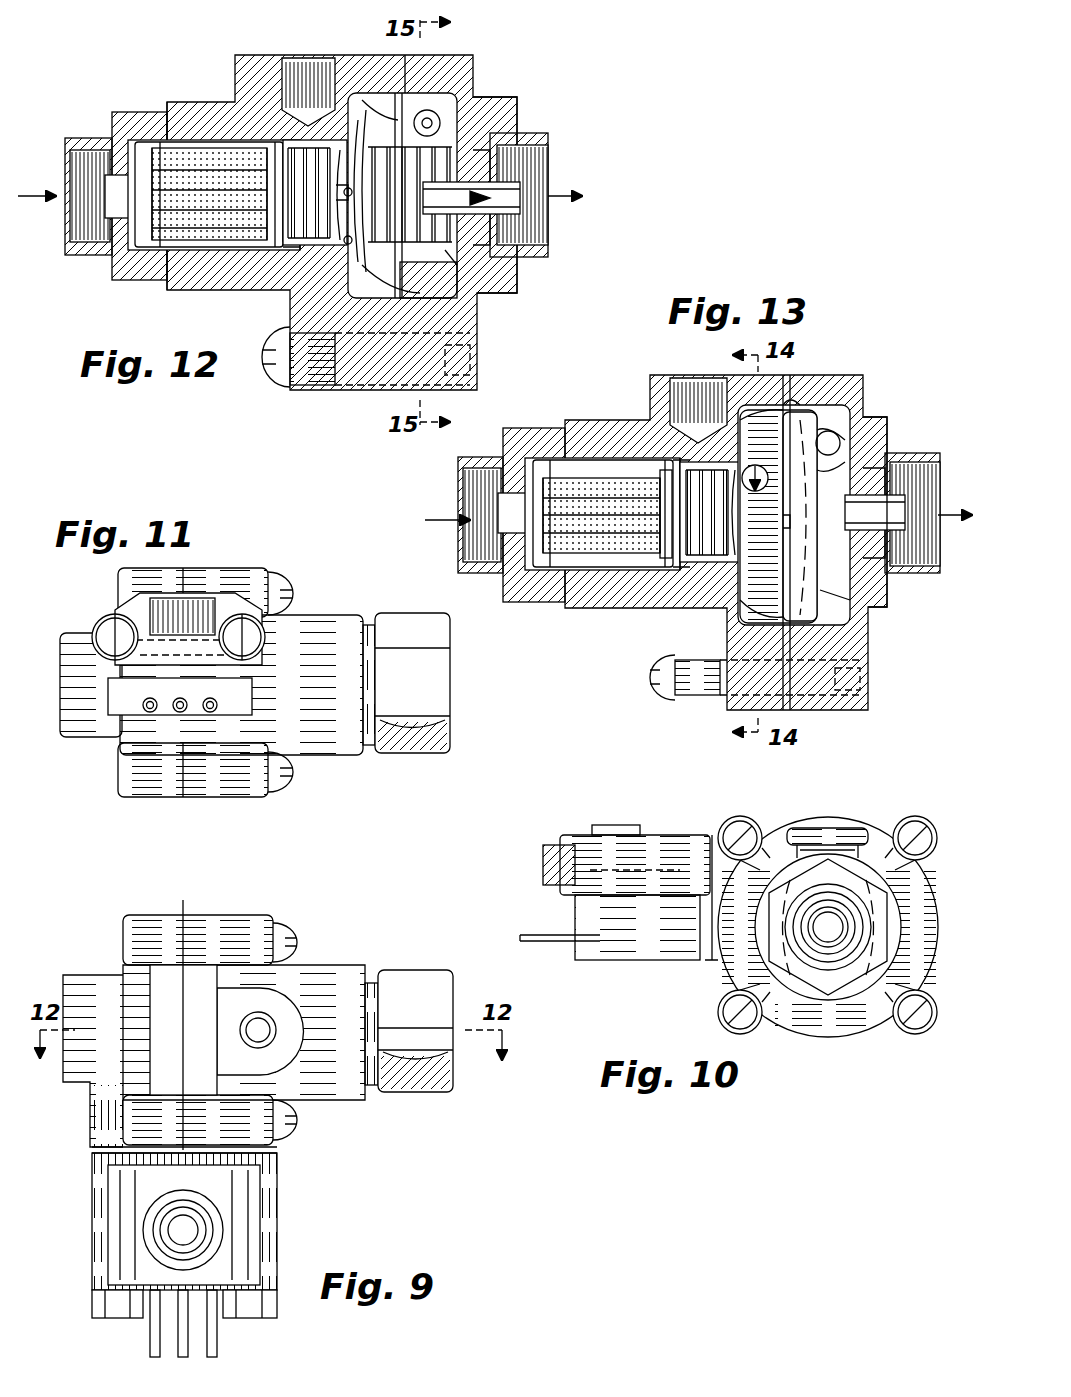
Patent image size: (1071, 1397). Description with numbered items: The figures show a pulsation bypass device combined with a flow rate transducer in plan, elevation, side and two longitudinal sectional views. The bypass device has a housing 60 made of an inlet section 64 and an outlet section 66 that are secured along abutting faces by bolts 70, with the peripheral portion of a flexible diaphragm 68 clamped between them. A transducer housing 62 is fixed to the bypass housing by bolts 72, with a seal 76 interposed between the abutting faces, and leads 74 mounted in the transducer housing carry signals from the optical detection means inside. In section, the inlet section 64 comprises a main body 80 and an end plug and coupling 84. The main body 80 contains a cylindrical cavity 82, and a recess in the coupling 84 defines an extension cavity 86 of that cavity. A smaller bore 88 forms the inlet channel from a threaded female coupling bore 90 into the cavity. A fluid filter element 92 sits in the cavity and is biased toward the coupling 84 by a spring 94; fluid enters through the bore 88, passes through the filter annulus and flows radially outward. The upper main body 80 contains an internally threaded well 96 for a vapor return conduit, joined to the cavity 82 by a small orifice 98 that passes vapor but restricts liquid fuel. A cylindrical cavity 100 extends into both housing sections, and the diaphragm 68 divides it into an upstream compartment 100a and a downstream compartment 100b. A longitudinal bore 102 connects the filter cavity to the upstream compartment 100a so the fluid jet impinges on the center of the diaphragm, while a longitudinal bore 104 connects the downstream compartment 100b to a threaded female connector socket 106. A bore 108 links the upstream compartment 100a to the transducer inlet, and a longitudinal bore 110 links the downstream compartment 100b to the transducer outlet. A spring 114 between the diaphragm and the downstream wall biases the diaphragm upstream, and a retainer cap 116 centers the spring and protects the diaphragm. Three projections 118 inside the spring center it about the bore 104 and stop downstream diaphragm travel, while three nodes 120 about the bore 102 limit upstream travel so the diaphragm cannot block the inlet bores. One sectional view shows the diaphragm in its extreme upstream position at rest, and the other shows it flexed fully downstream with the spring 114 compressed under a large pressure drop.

In FIG. 12, the housing 60 is at (480, 72).
In FIG. 13, the housing 60 is at (662, 376).
In FIG. 11, the housing 60 is at (316, 614).
In FIG. 9, the housing 60 is at (336, 960).
In FIG. 10, the housing 60 is at (840, 815).
In FIG. 11, the transducer housing 62 is at (128, 690).
In FIG. 9, the transducer housing 62 is at (288, 1205).
In FIG. 10, the transducer housing 62 is at (632, 832).
In FIG. 12, the inlet section 64 is at (158, 100).
In FIG. 11, the inlet section 64 is at (340, 750).
In FIG. 9, the inlet section 64 is at (362, 976).
In FIG. 10, the inlet section 64 is at (758, 957).
In FIG. 12, the outlet section 66 is at (522, 96).
In FIG. 13, the outlet section 66 is at (842, 702).
In FIG. 11, the outlet section 66 is at (80, 640).
In FIG. 9, the outlet section 66 is at (90, 985).
In FIG. 12, the diaphragm 68 is at (398, 93).
In FIG. 13, the diaphragm 68 is at (792, 440).
In FIG. 11, the diaphragm 68 is at (186, 568).
In FIG. 9, the diaphragm 68 is at (183, 1006).
In FIG. 12, the bolts 70 is at (275, 378).
In FIG. 13, the bolts 70 is at (652, 680).
In FIG. 11, the bolts 70 is at (285, 580).
In FIG. 9, the bolts 70 is at (284, 926).
In FIG. 10, the bolts 70 is at (748, 818).
In FIG. 11, the bolts 72 is at (108, 618).
In FIG. 9, the bolts 72 is at (93, 1304).
In FIG. 10, the bolts 72 is at (556, 858).
In FIG. 11, the leads 74 is at (218, 700).
In FIG. 9, the leads 74 is at (207, 1318).
In FIG. 10, the leads 74 is at (556, 945).
In FIG. 9, the seal 76 is at (92, 1148).
In FIG. 10, the seal 76 is at (710, 838).
In FIG. 12, the main body 80 is at (298, 140).
In FIG. 13, the main body 80 is at (672, 460).
In FIG. 12, the cavity 82 is at (285, 148).
In FIG. 13, the cavity 82 is at (625, 572).
In FIG. 12, the end plug and coupling 84 is at (120, 116).
In FIG. 13, the end plug and coupling 84 is at (522, 437).
In FIG. 12, the extension cavity 86 is at (200, 142).
In FIG. 13, the extension cavity 86 is at (575, 462).
In FIG. 12, the bore 88 is at (92, 188).
In FIG. 13, the bore 88 is at (482, 512).
In FIG. 10, the bore 88 is at (830, 942).
In FIG. 12, the threaded female coupling bore 90 is at (84, 142).
In FIG. 13, the threaded female coupling bore 90 is at (468, 540).
In FIG. 10, the threaded female coupling bore 90 is at (848, 922).
In FIG. 12, the fluid filter element 92 is at (140, 247).
In FIG. 13, the fluid filter element 92 is at (560, 582).
In FIG. 12, the spring 94 is at (330, 165).
In FIG. 13, the spring 94 is at (700, 560).
In FIG. 12, the well 96 is at (305, 70).
In FIG. 13, the well 96 is at (703, 400).
In FIG. 10, the well 96 is at (829, 828).
In FIG. 12, the orifice 98 is at (340, 150).
In FIG. 13, the orifice 98 is at (735, 470).
In FIG. 12, the cavity 100 is at (425, 272).
In FIG. 13, the cavity 100 is at (742, 588).
In FIG. 12, the upstream compartment 100a is at (372, 295).
In FIG. 13, the upstream compartment 100a is at (742, 622).
In FIG. 12, the downstream compartment 100b is at (385, 295).
In FIG. 13, the downstream compartment 100b is at (812, 605).
In FIG. 12, the longitudinal bore 102 is at (342, 212).
In FIG. 13, the longitudinal bore 102 is at (770, 534).
In FIG. 12, the longitudinal bore 104 is at (495, 137).
In FIG. 13, the longitudinal bore 104 is at (915, 472).
In FIG. 12, the threaded female connector socket 106 is at (535, 172).
In FIG. 13, the threaded female connector socket 106 is at (905, 572).
In FIG. 12, the bore 108 is at (408, 100).
In FIG. 13, the bore 108 is at (793, 410).
In FIG. 12, the longitudinal bore 110 is at (440, 117).
In FIG. 13, the longitudinal bore 110 is at (840, 437).
In FIG. 12, the spring 114 is at (448, 266).
In FIG. 13, the spring 114 is at (836, 594).
In FIG. 12, the retainer cap 116 is at (348, 246).
In FIG. 13, the retainer cap 116 is at (840, 446).
In FIG. 12, the projections 118 is at (500, 205).
In FIG. 13, the projections 118 is at (872, 505).
In FIG. 12, the nodes 120 is at (344, 196).
In FIG. 13, the nodes 120 is at (768, 490).